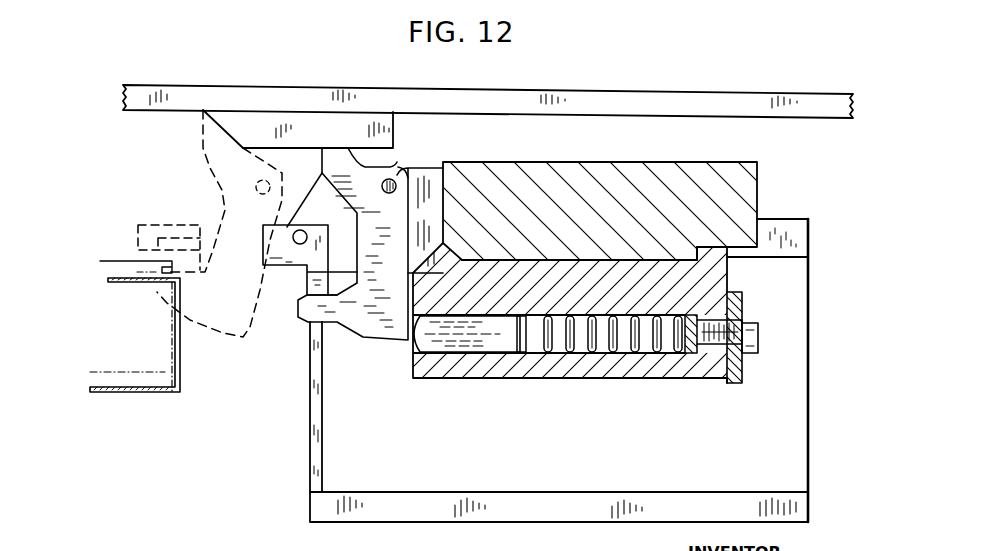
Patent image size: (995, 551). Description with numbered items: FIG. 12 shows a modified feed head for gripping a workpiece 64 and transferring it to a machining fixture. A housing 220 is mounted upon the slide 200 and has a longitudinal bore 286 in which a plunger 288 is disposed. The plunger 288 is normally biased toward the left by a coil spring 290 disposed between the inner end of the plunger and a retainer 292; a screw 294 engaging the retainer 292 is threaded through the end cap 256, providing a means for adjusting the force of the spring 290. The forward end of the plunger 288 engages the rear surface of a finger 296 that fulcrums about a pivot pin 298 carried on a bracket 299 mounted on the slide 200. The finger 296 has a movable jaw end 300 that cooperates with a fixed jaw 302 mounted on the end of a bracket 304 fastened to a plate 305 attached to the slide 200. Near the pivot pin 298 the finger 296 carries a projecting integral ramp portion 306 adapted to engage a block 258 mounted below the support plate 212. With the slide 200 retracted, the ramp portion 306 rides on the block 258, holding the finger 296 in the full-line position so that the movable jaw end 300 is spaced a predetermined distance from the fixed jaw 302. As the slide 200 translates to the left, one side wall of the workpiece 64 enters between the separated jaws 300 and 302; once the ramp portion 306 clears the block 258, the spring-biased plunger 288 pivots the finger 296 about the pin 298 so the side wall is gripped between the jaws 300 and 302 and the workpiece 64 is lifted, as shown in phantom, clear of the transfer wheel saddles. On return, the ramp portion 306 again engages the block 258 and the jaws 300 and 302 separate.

The block 258 is at (273, 123).
The projecting integral ramp portion 306 is at (333, 162).
The finger 296 is at (378, 327).
The bracket 299 is at (320, 173).
The pivot pin 298 is at (389, 174).
The fixed jaw 302 is at (282, 255).
The movable jaw end 300 is at (298, 318).
The workpiece 64 is at (143, 392).
The support plate 212 is at (525, 108).
The slide 200 is at (588, 170).
The housing 220 is at (565, 374).
The coil spring 290 is at (607, 316).
The plunger 288 is at (477, 340).
The longitudinal bore 286 is at (651, 354).
The retainer 292 is at (702, 353).
The screw 294 is at (733, 333).
The end cap 256 is at (742, 371).
The bracket 304 is at (309, 455).
The plate 305 is at (375, 514).